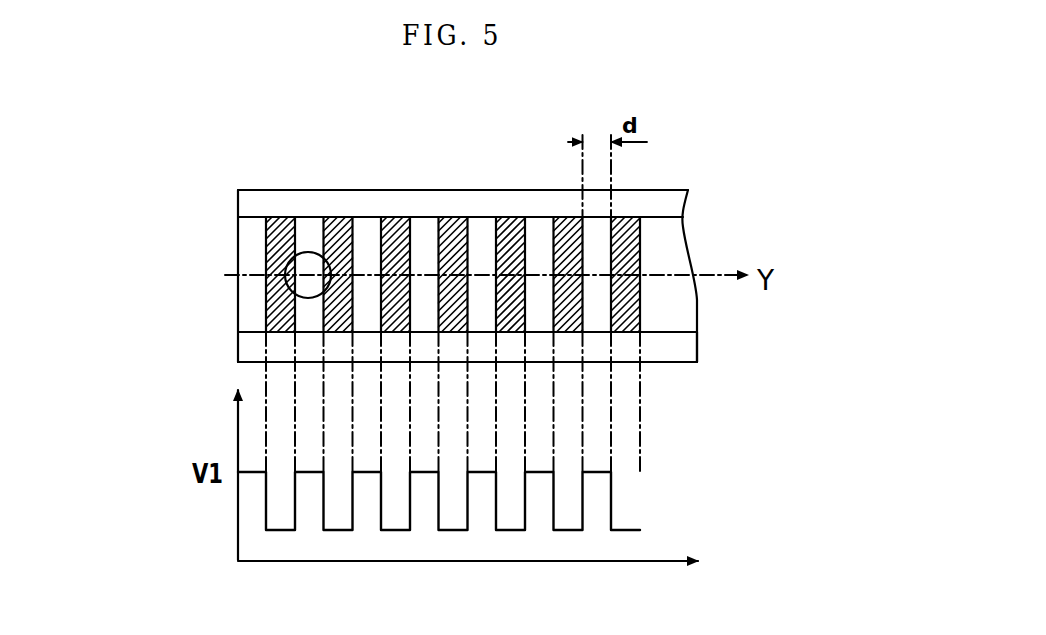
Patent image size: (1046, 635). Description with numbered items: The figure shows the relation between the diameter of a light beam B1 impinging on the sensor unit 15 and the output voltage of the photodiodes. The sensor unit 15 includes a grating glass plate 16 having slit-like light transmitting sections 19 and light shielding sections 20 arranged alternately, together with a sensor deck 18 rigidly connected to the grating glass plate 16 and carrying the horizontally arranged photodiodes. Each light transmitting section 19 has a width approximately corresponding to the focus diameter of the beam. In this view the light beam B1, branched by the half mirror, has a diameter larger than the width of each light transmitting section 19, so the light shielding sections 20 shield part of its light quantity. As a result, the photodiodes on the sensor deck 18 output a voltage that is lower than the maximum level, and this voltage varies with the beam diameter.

The sensor unit 15 is at (703, 245).
The grating glass plate 16 is at (682, 337).
The sensor deck 18 is at (678, 365).
The light transmitting section 19 is at (604, 309).
The light shielding section 20 is at (628, 218).
The light beam B1 is at (312, 252).